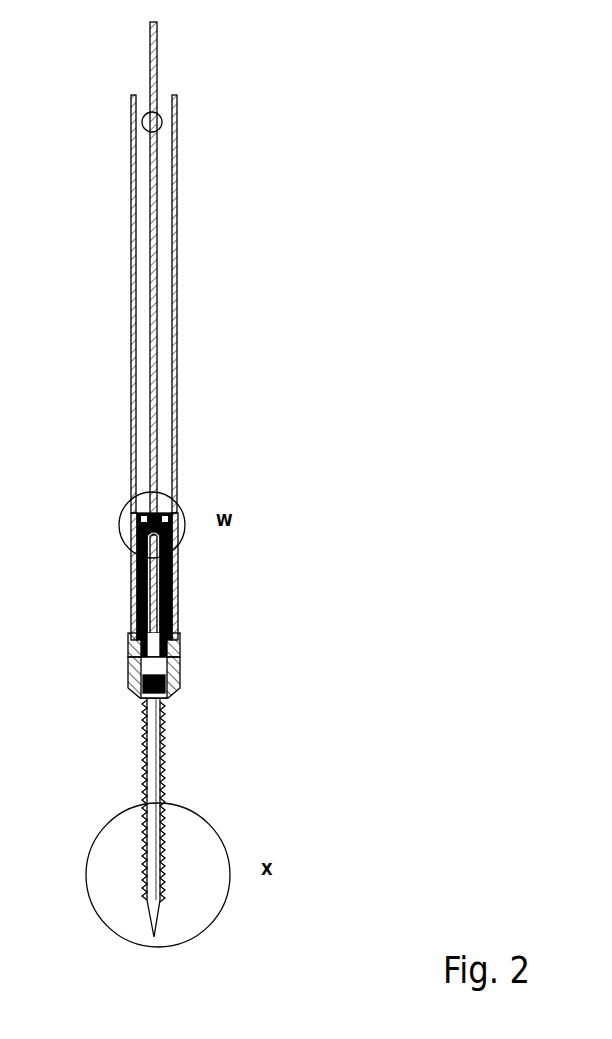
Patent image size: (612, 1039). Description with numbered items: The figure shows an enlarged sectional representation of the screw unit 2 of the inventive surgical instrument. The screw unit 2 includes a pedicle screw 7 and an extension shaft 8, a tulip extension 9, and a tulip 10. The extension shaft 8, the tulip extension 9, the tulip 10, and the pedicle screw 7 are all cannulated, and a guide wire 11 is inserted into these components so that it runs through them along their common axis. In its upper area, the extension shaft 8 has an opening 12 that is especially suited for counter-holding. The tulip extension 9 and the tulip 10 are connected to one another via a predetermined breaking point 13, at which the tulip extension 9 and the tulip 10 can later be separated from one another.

The screw unit 2 is at (97, 314).
The pedicle screw 7 is at (168, 706).
The extension shaft 8 is at (177, 330).
The tulip extension 9 is at (178, 580).
The tulip 10 is at (180, 672).
The guide wire 11 is at (157, 52).
The opening 12 is at (162, 119).
The predetermined breaking point 13 is at (178, 640).